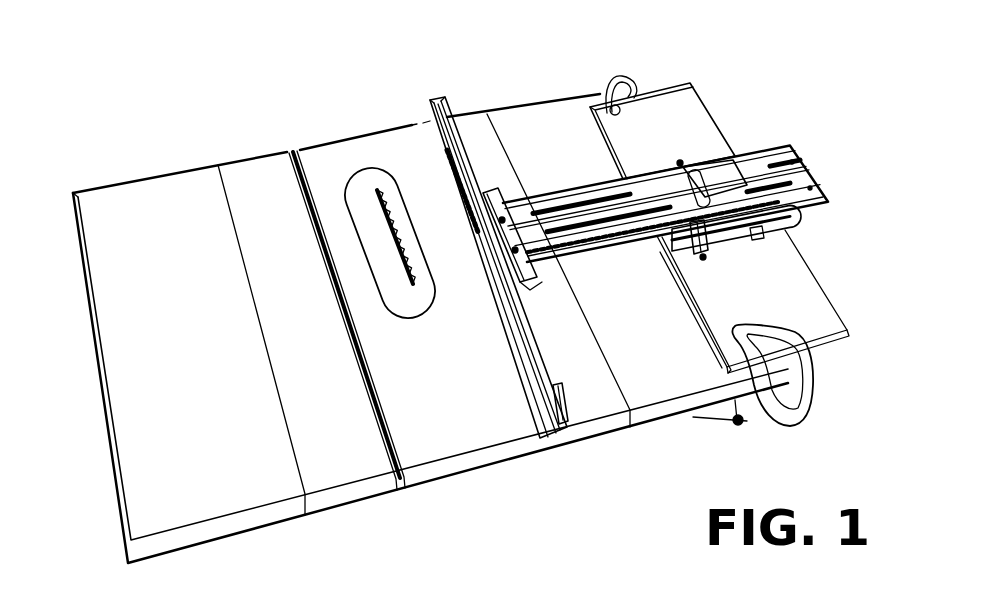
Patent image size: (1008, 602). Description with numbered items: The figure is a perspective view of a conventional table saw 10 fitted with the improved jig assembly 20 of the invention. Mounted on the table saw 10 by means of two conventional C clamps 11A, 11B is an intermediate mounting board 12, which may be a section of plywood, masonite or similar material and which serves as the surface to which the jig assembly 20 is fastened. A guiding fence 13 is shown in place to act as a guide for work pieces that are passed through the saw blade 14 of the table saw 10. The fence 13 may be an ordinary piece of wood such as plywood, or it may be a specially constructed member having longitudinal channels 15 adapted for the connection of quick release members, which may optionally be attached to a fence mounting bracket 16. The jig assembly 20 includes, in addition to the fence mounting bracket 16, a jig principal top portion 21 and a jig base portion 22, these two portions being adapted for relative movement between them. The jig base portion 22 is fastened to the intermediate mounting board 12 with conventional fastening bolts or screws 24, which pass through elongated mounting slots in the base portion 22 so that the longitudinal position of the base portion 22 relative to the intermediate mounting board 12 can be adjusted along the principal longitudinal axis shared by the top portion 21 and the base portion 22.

The table saw 10 is at (329, 517).
The C clamp 11A is at (626, 82).
The C clamp 11B is at (794, 383).
The intermediate mounting board 12 is at (805, 287).
The guiding fence 13 is at (533, 377).
The saw blade 14 is at (400, 250).
The channels 15 is at (569, 393).
The fence mounting bracket 16 is at (530, 283).
The jig assembly 20 is at (663, 260).
The jig principal top portion 21 is at (602, 193).
The jig base portion 22 is at (788, 220).
The fastening bolts or screws 24 is at (700, 252).